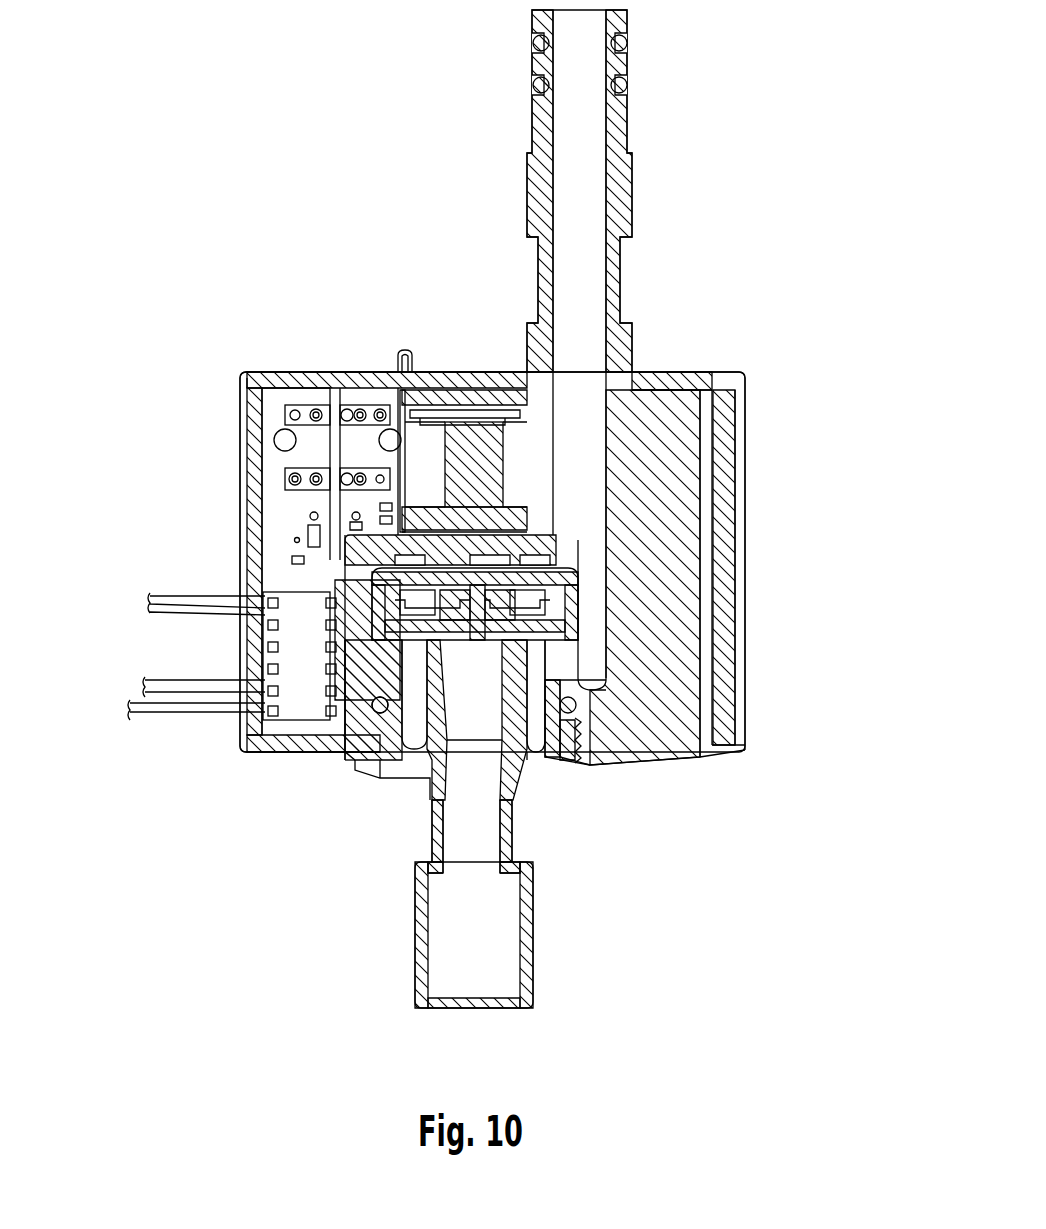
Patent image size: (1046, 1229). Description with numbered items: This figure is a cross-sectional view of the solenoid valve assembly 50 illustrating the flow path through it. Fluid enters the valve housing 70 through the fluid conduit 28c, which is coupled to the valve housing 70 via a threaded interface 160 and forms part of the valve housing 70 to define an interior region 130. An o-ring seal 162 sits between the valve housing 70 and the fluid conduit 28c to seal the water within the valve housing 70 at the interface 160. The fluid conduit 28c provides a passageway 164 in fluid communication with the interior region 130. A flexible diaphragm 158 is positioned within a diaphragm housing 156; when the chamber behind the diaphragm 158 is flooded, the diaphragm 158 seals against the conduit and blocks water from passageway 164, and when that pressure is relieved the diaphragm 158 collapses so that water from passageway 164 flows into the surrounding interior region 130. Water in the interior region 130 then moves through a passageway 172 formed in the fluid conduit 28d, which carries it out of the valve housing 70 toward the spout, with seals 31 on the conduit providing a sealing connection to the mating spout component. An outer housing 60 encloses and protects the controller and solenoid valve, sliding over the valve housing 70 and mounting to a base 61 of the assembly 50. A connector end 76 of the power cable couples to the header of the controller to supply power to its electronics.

The solenoid valve assembly 50 is at (203, 192).
The fluid conduit 28d is at (528, 112).
The seals 31 is at (628, 42).
The passageway 172 is at (585, 187).
The outer housing 60 is at (712, 372).
The base 61 is at (700, 758).
The valve housing 70 is at (358, 567).
The connector end 76 is at (300, 668).
The interior region 130 is at (530, 695).
The diaphragm housing 156 is at (345, 592).
The flexible diaphragm 158 is at (560, 615).
The threaded interface 160 is at (348, 748).
The o-ring seal 162 is at (578, 708).
The passageway 164 is at (465, 828).
The fluid conduit 28c is at (410, 953).